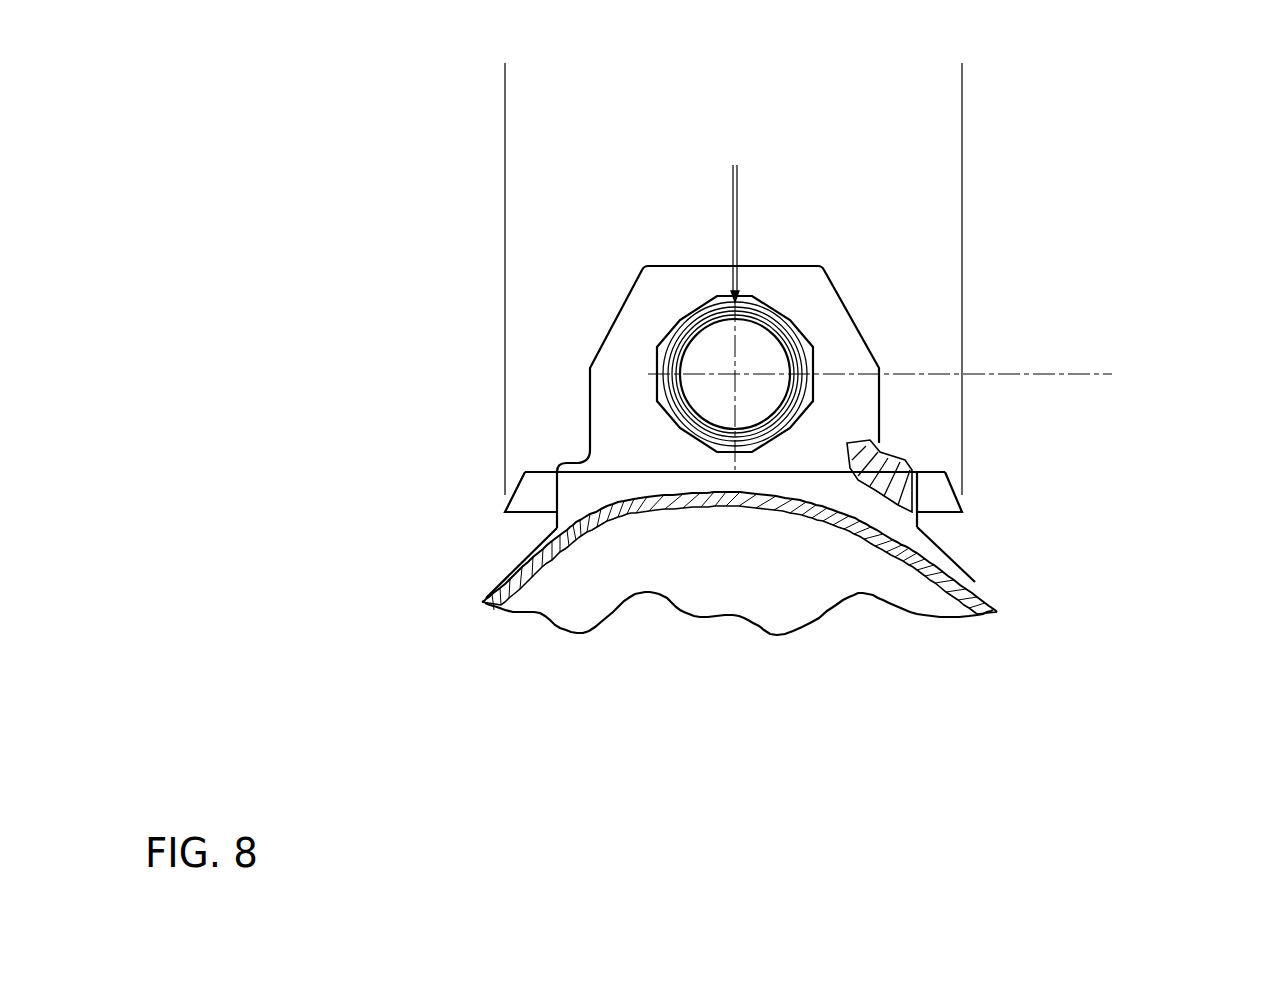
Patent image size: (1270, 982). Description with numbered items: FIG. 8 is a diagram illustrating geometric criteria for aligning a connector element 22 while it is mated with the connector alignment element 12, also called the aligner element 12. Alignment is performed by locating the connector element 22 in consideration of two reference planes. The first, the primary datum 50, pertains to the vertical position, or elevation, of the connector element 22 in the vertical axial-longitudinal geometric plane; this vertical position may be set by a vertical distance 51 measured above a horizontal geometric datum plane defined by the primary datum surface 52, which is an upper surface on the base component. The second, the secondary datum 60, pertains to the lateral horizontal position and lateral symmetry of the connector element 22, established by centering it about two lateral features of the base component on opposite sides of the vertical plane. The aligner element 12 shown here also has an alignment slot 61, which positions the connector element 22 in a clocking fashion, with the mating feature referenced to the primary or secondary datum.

The connector alignment element 12 is at (808, 347).
The connector element 22 is at (663, 402).
The primary datum 50 is at (881, 533).
The vertical distance 51 is at (975, 510).
The primary datum surface 52 is at (946, 514).
The secondary datum 60 is at (505, 83).
The alignment slot 61 is at (773, 172).